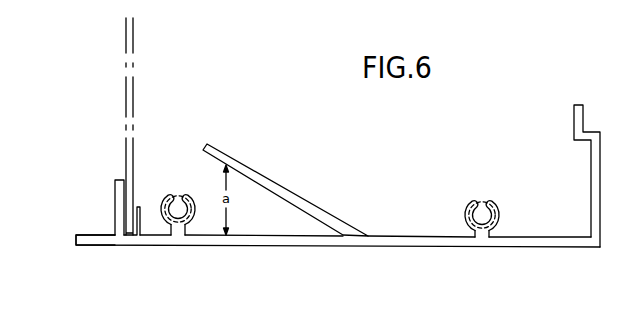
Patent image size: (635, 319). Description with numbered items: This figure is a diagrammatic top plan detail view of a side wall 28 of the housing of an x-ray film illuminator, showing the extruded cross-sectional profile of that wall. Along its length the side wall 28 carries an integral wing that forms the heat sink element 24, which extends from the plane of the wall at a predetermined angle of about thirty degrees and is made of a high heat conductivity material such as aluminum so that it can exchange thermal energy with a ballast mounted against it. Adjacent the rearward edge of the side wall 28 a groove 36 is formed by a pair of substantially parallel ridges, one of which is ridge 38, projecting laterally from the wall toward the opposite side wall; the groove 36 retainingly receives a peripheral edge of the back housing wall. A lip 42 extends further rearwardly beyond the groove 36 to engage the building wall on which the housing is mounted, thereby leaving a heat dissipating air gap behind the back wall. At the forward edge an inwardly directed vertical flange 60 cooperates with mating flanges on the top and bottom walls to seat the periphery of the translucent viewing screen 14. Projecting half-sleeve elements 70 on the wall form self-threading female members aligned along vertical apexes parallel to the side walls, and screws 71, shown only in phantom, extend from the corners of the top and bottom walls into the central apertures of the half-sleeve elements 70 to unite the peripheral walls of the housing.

The viewing screen 14 is at (134, 84).
The heat sink element 24 is at (241, 163).
The side wall 28 is at (401, 247).
The groove 36 is at (119, 238).
The ridge 38 is at (115, 190).
The lip 42 is at (90, 235).
The vertical flange 60 is at (574, 113).
The half-sleeve element 70 is at (165, 207).
The screw 71 is at (484, 201).